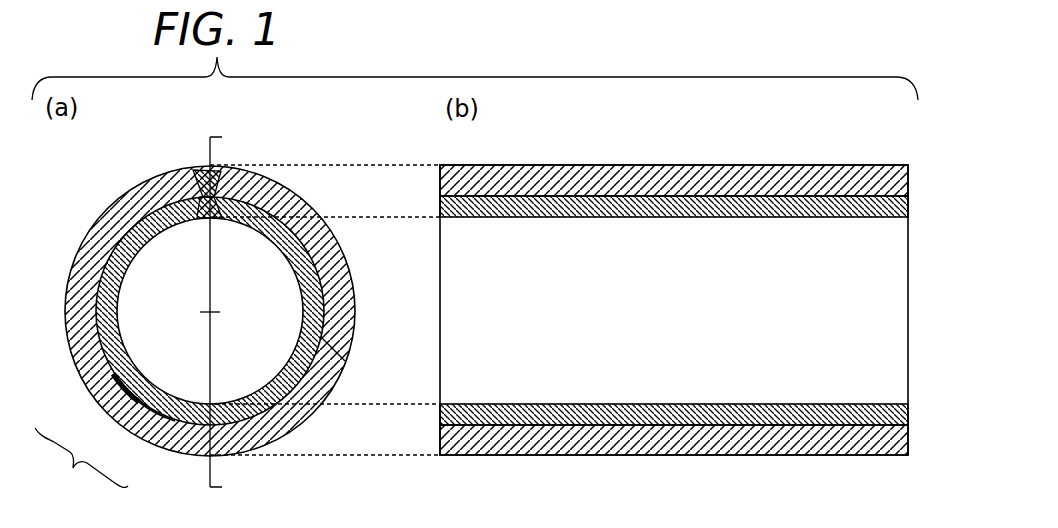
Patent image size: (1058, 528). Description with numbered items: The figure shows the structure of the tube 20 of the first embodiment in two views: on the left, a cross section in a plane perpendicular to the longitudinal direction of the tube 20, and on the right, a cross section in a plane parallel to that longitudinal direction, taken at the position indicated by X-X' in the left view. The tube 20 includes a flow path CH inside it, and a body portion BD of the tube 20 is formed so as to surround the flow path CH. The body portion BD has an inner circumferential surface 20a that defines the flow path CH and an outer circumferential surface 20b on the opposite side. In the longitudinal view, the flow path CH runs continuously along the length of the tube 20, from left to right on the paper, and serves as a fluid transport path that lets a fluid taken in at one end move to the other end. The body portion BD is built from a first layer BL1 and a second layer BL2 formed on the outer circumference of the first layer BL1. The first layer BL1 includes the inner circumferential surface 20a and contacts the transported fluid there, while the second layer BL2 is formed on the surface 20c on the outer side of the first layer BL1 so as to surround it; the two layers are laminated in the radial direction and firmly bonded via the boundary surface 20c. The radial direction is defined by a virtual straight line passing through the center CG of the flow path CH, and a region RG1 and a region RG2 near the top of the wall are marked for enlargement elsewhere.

The tube 20 is at (482, 313).
The inner circumferential surface 20a is at (457, 273).
The outer circumferential surface 20b is at (490, 466).
The boundary surface 20c is at (482, 336).
The first layer BL1 is at (90, 392).
The second layer BL2 is at (137, 433).
The body portion BD is at (81, 466).
The region RG1 is at (188, 212).
The region RG2 is at (190, 174).
The flow path CH is at (425, 146).
The center CG is at (225, 324).
The position X-X' X is at (230, 315).